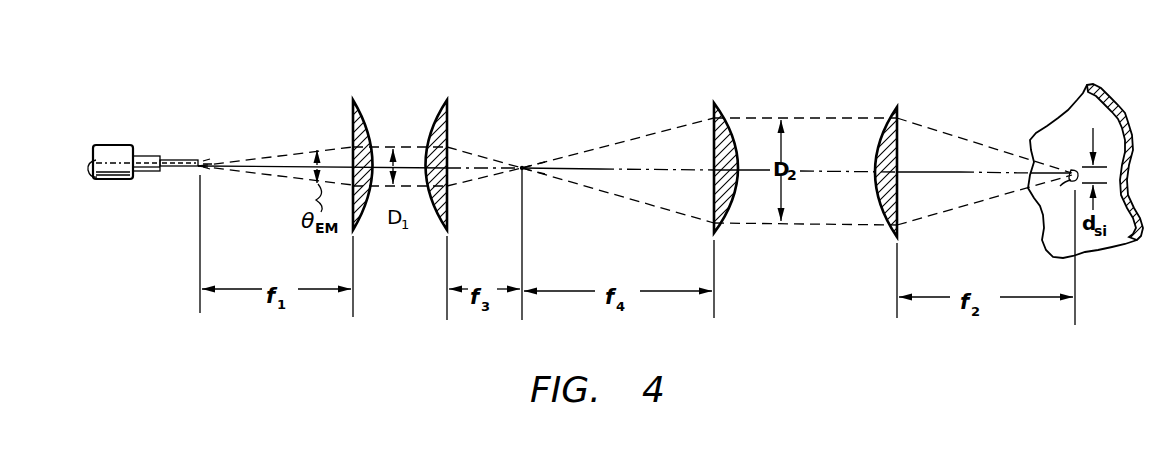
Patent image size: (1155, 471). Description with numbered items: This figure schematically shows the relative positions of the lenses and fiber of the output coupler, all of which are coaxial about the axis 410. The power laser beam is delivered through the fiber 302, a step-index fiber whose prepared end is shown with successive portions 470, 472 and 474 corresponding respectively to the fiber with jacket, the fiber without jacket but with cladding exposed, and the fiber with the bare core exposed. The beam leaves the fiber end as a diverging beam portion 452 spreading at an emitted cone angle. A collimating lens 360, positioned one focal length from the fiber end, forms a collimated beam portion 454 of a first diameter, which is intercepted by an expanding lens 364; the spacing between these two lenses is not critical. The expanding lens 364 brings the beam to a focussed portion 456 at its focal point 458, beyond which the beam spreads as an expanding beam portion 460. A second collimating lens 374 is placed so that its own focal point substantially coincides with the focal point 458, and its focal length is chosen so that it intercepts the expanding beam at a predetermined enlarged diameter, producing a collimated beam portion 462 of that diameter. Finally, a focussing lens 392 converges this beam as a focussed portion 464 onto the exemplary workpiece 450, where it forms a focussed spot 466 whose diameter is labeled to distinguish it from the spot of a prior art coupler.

The fiber 302 is at (118, 136).
The fiber portion with jacket 470 is at (110, 180).
The fiber portion with cladding exposed 472 is at (150, 174).
The fiber portion with bare core exposed 474 is at (186, 160).
The diverging beam portion 452 is at (290, 147).
The collimating lens 360 is at (362, 102).
The collimated beam portion 454 is at (402, 148).
The expanding lens 364 is at (446, 122).
The focussed portion 456 is at (479, 186).
The axis 410 is at (491, 166).
The focal point 458 is at (526, 163).
The expanding beam portion 460 is at (616, 140).
The collimating lens 374 is at (718, 106).
The collimated beam portion 462 is at (845, 118).
The focussing lens 392 is at (900, 142).
The focussed portion 464 is at (993, 147).
The workpiece 450 is at (1087, 85).
The focussed spot 466 is at (1050, 200).